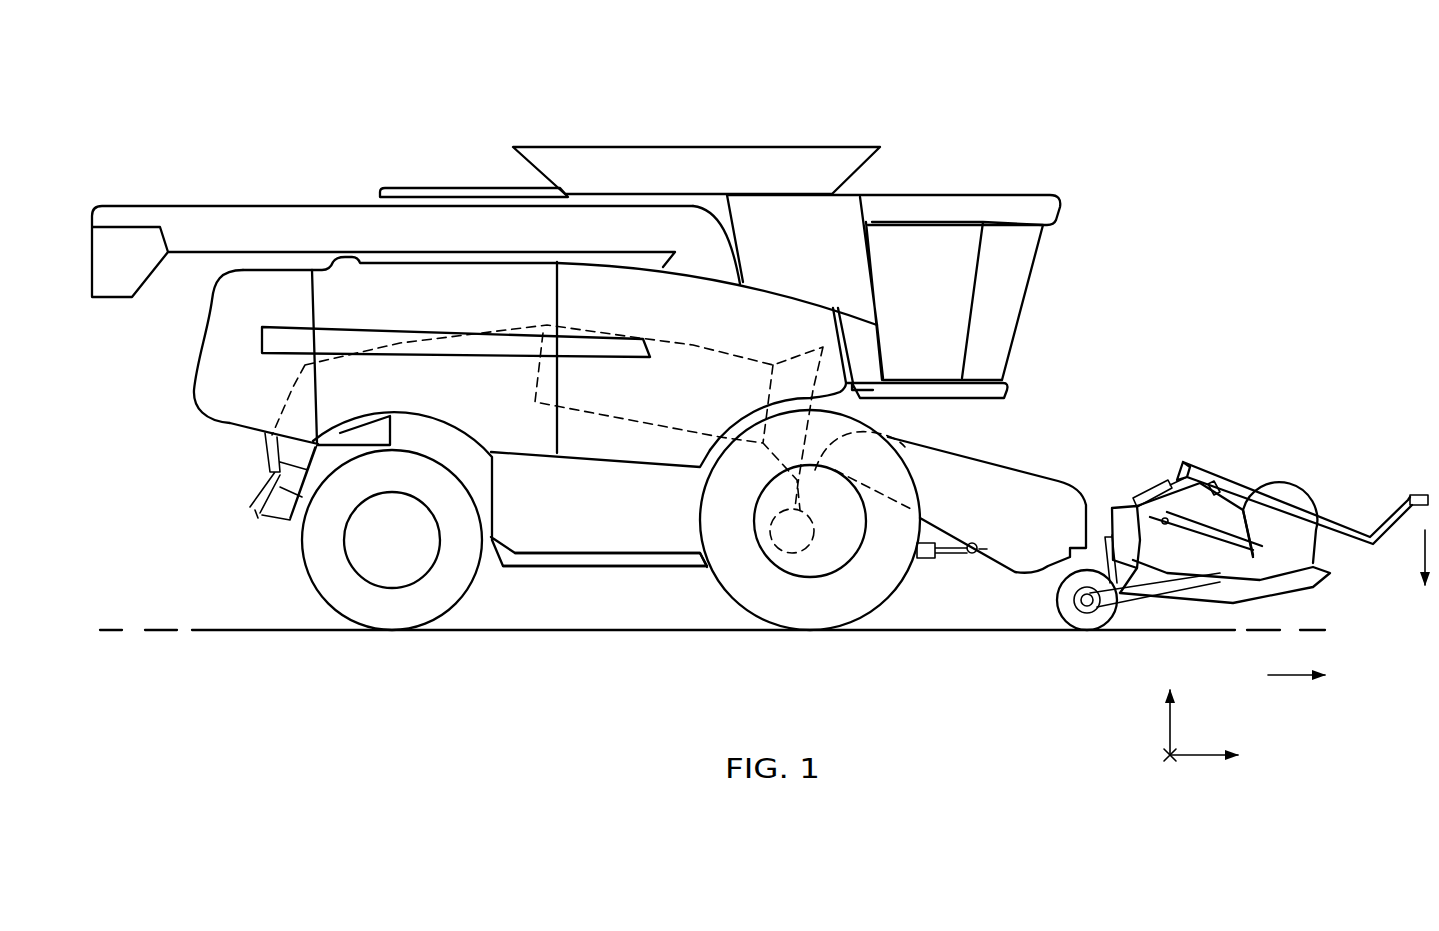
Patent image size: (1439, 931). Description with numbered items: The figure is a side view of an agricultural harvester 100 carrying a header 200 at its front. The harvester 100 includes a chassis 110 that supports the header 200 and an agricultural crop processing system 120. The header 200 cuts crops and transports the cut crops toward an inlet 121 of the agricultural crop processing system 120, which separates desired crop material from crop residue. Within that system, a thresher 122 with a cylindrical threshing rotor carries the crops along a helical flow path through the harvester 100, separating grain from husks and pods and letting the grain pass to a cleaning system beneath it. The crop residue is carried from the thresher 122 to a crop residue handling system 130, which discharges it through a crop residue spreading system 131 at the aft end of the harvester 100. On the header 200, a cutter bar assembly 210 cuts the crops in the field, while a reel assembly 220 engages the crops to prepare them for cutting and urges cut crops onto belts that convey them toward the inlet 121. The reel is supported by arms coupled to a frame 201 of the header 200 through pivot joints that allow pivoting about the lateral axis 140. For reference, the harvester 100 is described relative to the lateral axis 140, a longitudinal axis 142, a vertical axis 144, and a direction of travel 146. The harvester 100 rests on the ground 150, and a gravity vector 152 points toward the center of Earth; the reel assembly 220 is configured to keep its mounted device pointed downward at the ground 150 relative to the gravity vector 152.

The harvester 100 is at (1064, 104).
The chassis 110 is at (541, 572).
The agricultural crop processing system 120 is at (680, 321).
The inlet 121 is at (890, 432).
The thresher 122 is at (696, 345).
The crop residue handling system 130 is at (357, 314).
The crop residue spreading system 131 is at (251, 488).
The lateral axis 140 is at (1168, 757).
The longitudinal axis 142 is at (1193, 755).
The vertical axis 144 is at (1167, 727).
The direction of travel 146 is at (1290, 673).
The ground 150 is at (898, 632).
The gravity vector 152 is at (1425, 548).
The header 200 is at (1196, 431).
The frame 201 is at (1125, 520).
The cutter bar assembly 210 is at (1318, 588).
The reel assembly 220 is at (1297, 497).